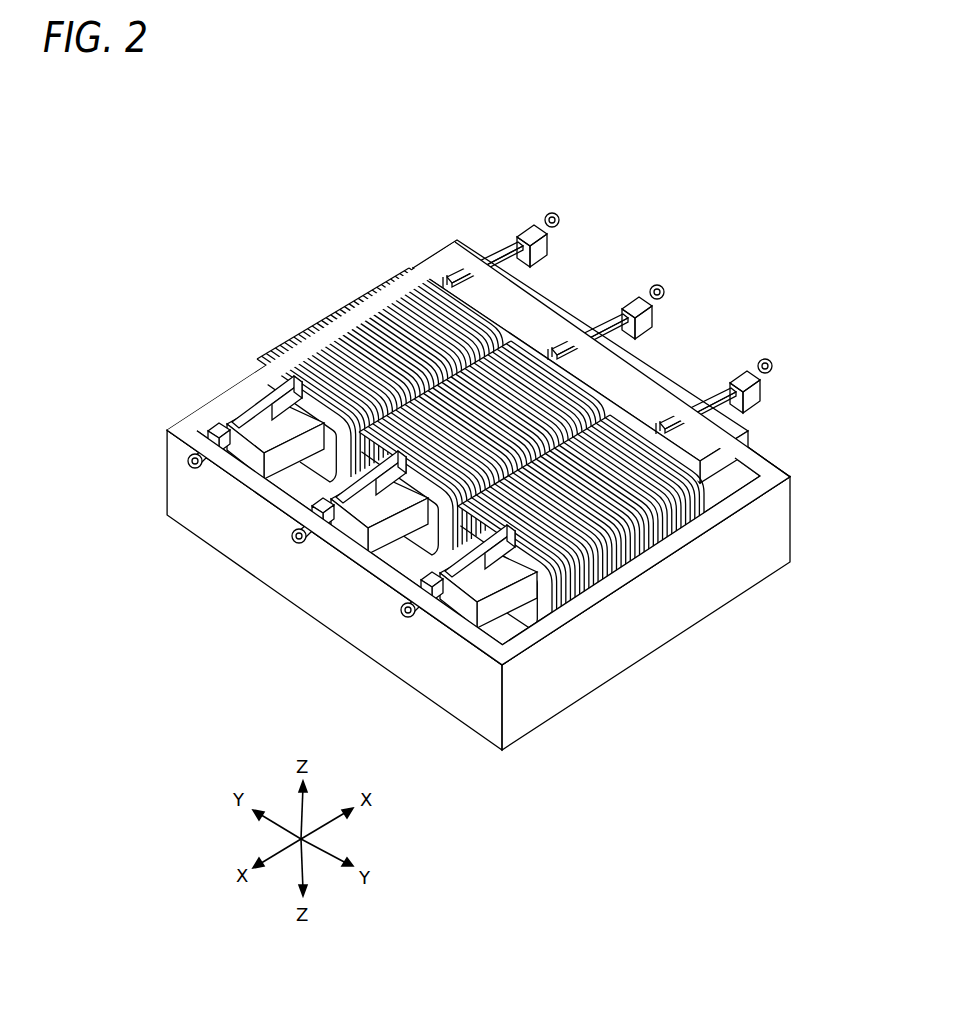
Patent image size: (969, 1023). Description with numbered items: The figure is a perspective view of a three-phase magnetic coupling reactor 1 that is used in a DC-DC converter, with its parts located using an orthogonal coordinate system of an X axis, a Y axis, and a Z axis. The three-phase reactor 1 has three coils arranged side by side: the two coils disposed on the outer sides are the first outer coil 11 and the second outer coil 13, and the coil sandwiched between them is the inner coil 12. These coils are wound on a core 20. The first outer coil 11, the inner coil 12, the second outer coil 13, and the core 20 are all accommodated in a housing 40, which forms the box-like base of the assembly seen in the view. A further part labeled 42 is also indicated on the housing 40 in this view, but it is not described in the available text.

The three-phase magnetic coupling reactor 1 is at (668, 150).
The first outer coil 11 is at (377, 306).
The inner coil 12 is at (517, 343).
The second outer coil 13 is at (622, 443).
The core 20 is at (743, 420).
The housing 40 is at (716, 606).
The side wall of case 42 is at (246, 537).